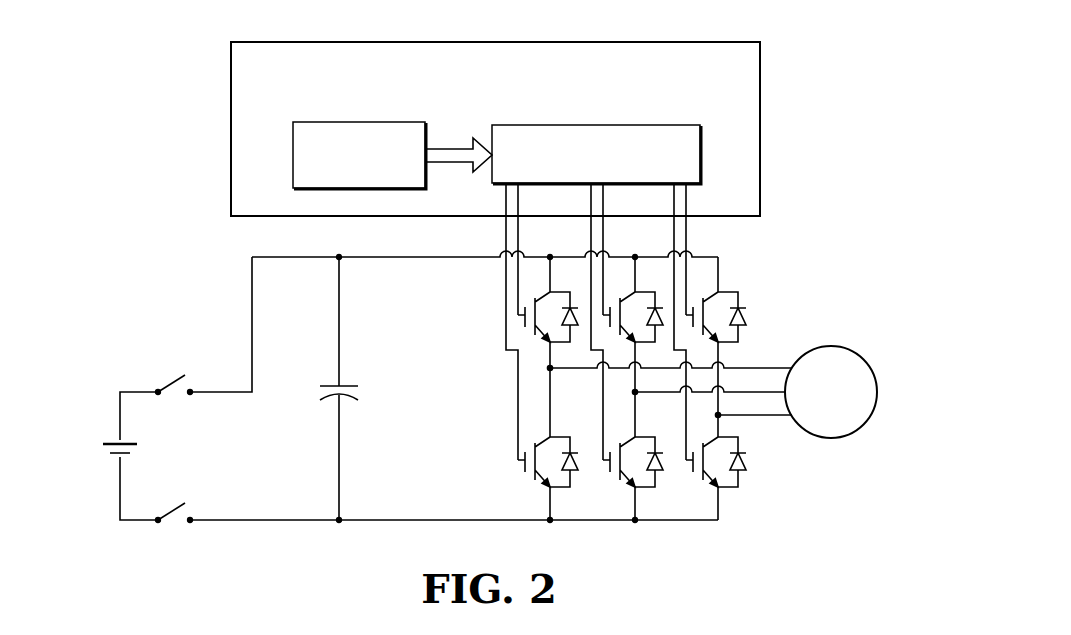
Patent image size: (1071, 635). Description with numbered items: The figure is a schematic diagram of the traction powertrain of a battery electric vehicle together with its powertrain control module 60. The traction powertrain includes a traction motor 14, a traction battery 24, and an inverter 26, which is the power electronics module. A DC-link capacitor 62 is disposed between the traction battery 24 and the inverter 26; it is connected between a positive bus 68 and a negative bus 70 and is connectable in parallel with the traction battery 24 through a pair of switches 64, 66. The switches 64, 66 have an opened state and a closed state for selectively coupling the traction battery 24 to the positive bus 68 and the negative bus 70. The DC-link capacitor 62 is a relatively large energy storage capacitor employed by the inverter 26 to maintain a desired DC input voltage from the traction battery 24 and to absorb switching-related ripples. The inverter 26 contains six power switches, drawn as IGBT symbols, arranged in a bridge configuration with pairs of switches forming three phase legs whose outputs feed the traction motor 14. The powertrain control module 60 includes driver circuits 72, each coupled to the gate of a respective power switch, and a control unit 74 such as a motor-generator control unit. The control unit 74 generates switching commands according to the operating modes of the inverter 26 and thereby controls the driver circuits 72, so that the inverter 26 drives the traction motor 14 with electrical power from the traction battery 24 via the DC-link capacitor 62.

The traction motor 14 is at (859, 349).
The traction battery 24 is at (117, 444).
The inverter 26 is at (742, 271).
The powertrain control module 60 is at (478, 42).
The DC-link capacitor 62 is at (348, 384).
The switch 64 is at (168, 387).
The switch 66 is at (167, 516).
The positive bus 68 is at (471, 257).
The negative bus 70 is at (402, 520).
The driver circuit 72 is at (592, 125).
The control unit 74 is at (358, 122).